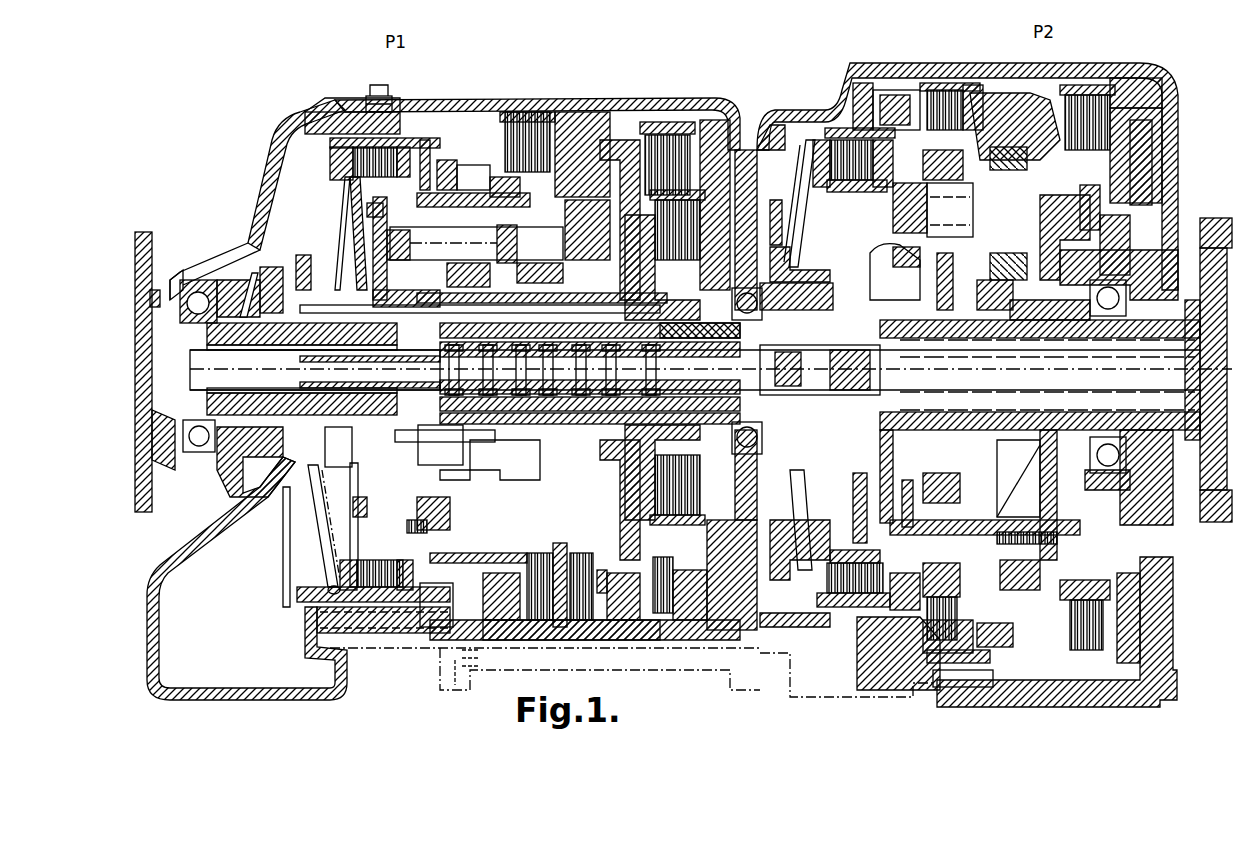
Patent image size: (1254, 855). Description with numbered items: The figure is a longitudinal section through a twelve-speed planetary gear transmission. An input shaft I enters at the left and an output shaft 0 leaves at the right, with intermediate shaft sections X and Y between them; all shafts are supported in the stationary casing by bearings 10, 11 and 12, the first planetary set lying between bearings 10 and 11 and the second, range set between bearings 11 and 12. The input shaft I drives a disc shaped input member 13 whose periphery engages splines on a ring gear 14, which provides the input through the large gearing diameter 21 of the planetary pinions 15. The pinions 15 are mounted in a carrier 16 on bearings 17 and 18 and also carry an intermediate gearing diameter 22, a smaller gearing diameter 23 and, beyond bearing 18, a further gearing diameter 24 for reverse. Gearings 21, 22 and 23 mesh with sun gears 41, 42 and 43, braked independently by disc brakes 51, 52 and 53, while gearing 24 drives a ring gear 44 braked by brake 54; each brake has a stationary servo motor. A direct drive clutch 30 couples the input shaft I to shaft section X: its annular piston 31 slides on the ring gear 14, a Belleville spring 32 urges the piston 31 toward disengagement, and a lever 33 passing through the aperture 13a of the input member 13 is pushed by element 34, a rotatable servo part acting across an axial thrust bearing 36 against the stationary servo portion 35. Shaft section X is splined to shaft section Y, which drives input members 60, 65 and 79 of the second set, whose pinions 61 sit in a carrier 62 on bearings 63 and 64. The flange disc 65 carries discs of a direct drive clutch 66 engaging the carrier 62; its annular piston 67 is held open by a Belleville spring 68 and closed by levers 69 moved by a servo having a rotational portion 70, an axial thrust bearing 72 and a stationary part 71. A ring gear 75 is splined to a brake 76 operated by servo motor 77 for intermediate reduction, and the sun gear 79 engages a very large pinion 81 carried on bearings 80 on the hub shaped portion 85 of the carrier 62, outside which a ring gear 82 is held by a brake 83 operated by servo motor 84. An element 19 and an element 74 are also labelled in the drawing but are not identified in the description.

The output shaft 0 is at (1214, 220).
The bearing 10 is at (178, 272).
The bearing 11 is at (738, 150).
The bearing 12 is at (1135, 262).
The disc shaped input member 13 is at (282, 166).
The aperture 13a is at (290, 560).
The ring gear 14 is at (420, 138).
The planetary pinion 15 is at (475, 244).
The carrier 16 is at (350, 220).
The bearing 17 is at (393, 215).
The bearing 18 is at (490, 206).
The guide sleeve 19 is at (346, 472).
The large gearing diameter 21 is at (445, 160).
The intermediate gearing diameter 22 is at (478, 160).
The smaller gearing diameter 23 is at (495, 185).
The further gearing diameter 24 is at (568, 112).
The direct drive clutch 30 is at (372, 118).
The annular piston 31 is at (335, 100).
The Belleville spring 32 is at (340, 205).
The lever 33 is at (252, 273).
The rotatable servo piston part 34 is at (382, 252).
The stationary servo piston portion 35 is at (200, 325).
The axial thrust bearing 36 is at (300, 258).
The sun gear 41 is at (425, 440).
The sun gear 42 is at (452, 478).
The sun gear 43 is at (488, 478).
The ring gear 44 is at (538, 545).
The disc brake 51 is at (700, 135).
The disc brake 52 is at (665, 128).
The disc brake 53 is at (600, 140).
The brake 54 is at (535, 116).
The input member 60 is at (935, 290).
The planetary pinion 61 is at (954, 219).
The carrier 62 is at (838, 130).
The bearing 63 is at (900, 210).
The bearing 64 is at (1085, 200).
The flange disc 65 is at (842, 246).
The direct drive clutch 66 is at (845, 190).
The annular piston 67 is at (805, 140).
The Belleville spring 68 is at (768, 148).
The lever 69 is at (808, 540).
The rotational servo motor portion 70 is at (830, 470).
The stationary servo part 71 is at (868, 380).
The axial thrust bearing 72 is at (806, 540).
The ring gear 74 is at (955, 281).
The ring gear 75 is at (958, 90).
The brake 76 is at (930, 150).
The servo motor 77 is at (885, 88).
The sun gear 79 is at (1030, 340).
The bearing 80 is at (977, 293).
The large diameter pinion 81 is at (1072, 92).
The ring gear 82 is at (1005, 100).
The brake 83 is at (1120, 80).
The servo motor 84 is at (1130, 112).
The hub shaped portion 85 is at (1115, 228).
The input shaft I is at (140, 514).
The shaft section X is at (686, 330).
The shaft section Y is at (862, 320).